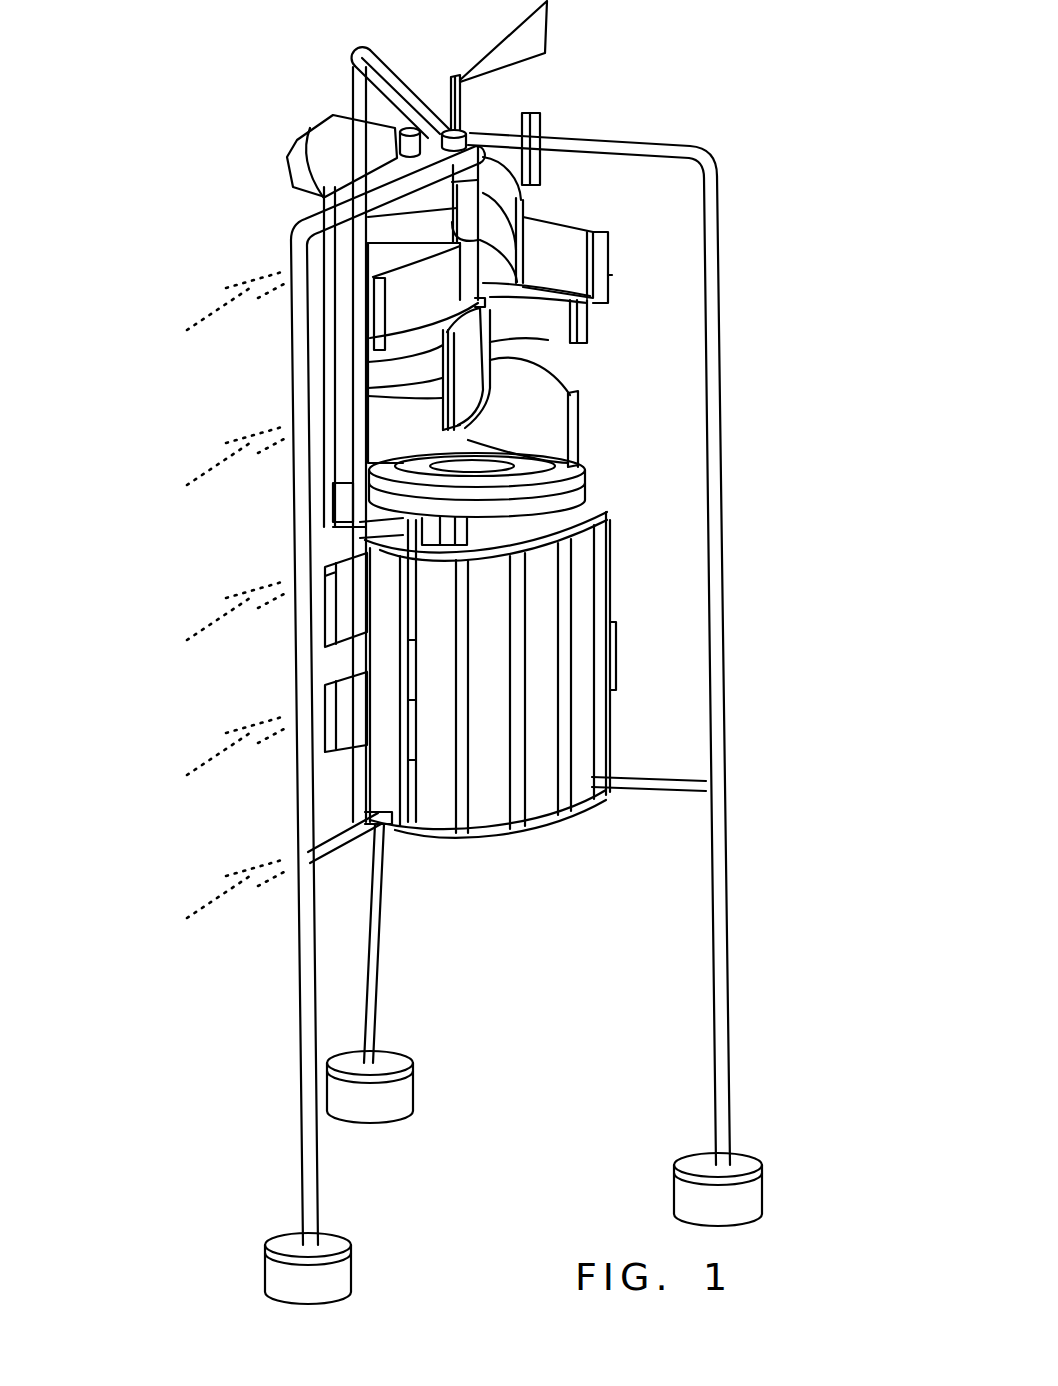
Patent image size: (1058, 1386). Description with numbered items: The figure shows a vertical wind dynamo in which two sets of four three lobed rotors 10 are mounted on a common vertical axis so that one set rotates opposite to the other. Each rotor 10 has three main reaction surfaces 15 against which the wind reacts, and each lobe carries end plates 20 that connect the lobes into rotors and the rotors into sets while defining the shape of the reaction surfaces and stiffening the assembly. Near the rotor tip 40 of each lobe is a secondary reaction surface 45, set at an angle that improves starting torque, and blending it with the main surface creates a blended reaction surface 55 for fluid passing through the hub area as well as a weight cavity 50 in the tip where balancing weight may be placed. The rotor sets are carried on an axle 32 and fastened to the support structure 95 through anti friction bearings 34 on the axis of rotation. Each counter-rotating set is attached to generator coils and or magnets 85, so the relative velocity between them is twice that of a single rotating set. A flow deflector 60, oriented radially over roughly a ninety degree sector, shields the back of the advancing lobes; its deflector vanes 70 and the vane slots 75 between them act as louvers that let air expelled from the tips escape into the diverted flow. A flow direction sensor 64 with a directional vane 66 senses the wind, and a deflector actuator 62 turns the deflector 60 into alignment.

The three lobed rotor 10 is at (418, 300).
The main reaction surface 15 is at (542, 407).
The end plate 20 is at (550, 348).
The axle 32 is at (451, 128).
The anti friction bearing 34 is at (443, 130).
The rotor tip 40 is at (605, 257).
The secondary reaction surface 45 is at (602, 274).
The weight cavity 50 is at (330, 580).
The blended reaction surface 55 is at (540, 167).
The flow deflector 60 is at (350, 140).
The deflector actuator 62 is at (398, 138).
The flow direction sensor 64 is at (467, 130).
The directional vane 66 is at (548, 42).
The deflector vane 70 is at (287, 153).
The vane slot 75 is at (420, 823).
The generator coils and or magnets 85 is at (513, 500).
The support structure 95 is at (718, 242).